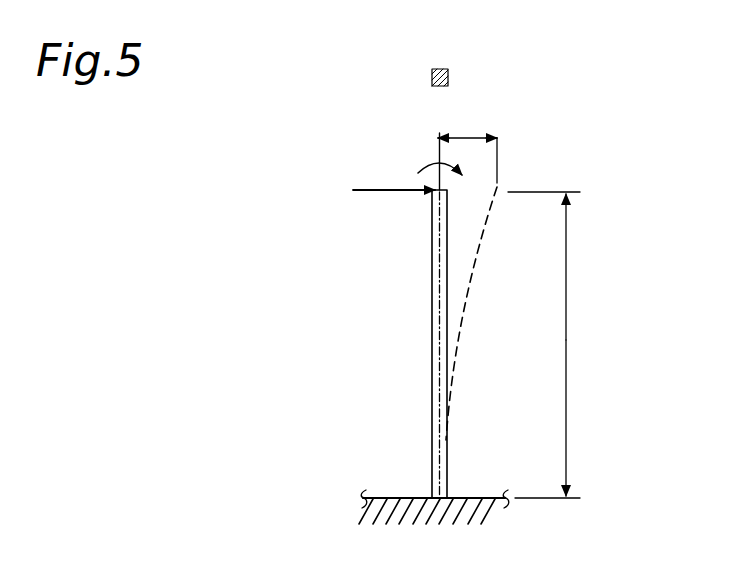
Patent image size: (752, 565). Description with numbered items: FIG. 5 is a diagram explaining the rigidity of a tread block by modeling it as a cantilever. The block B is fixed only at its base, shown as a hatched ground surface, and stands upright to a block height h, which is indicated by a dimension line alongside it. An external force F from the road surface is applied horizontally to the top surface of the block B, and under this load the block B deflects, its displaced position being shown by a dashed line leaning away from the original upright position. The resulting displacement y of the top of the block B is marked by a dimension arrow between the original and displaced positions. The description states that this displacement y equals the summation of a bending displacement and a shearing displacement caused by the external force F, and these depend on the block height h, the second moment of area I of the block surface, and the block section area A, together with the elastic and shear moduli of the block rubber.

The block section area A is at (449, 77).
The block B is at (432, 305).
The external force F is at (368, 185).
The second moment of area of block surface I is at (425, 163).
The displacement y is at (465, 137).
The block height h is at (568, 318).